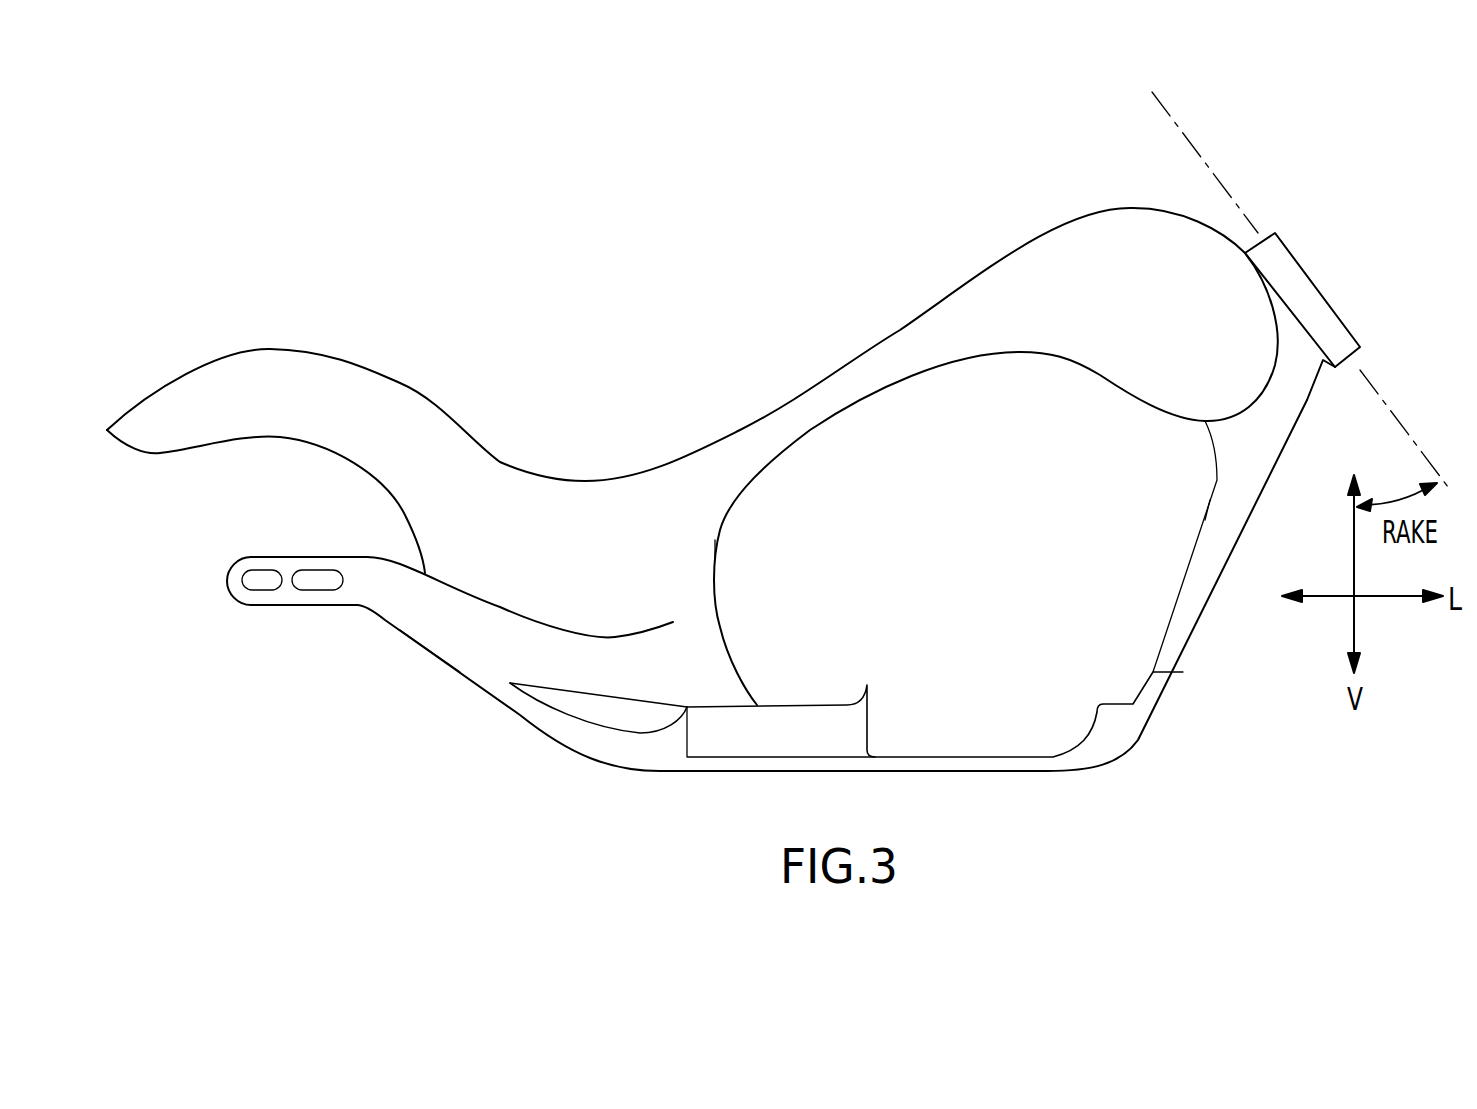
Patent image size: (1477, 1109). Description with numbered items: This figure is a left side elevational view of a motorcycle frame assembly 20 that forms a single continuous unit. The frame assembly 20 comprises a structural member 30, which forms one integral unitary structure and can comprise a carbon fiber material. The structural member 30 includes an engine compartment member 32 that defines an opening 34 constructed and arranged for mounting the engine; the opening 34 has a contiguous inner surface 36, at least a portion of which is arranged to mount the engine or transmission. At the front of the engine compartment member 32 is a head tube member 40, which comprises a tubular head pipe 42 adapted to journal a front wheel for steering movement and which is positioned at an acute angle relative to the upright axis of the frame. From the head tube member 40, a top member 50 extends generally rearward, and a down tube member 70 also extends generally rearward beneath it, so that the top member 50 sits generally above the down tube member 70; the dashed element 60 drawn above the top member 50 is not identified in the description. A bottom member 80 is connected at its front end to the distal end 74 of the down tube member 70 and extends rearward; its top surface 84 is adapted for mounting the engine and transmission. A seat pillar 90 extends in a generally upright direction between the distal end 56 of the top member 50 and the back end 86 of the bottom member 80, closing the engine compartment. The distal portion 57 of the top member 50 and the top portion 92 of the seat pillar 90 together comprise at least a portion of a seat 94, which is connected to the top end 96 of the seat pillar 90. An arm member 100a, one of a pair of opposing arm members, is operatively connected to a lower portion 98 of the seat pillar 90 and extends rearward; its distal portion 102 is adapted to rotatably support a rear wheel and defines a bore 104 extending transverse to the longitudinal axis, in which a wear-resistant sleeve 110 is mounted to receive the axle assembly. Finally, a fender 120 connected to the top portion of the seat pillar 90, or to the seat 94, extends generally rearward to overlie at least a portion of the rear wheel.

The frame assembly 20 is at (721, 452).
The structural member 30 is at (837, 372).
The engine compartment member 32 is at (1010, 353).
The opening 34 is at (1015, 558).
The contiguous inner surface 36 is at (895, 755).
The head tube member 40 is at (1300, 289).
The tubular head pipe 42 is at (1263, 235).
The top member 50 is at (882, 390).
The distal end of the top member 56 is at (683, 523).
The distal portion of the top member 57 is at (755, 552).
The fuel tank 60 is at (1113, 267).
The down tube member 70 is at (1213, 498).
The distal end of the down tube member 74 is at (1183, 672).
The bottom member 80 is at (987, 772).
The top surface 84 is at (993, 755).
The back end of the bottom member 86 is at (730, 743).
The seat pillar 90 is at (697, 632).
The top portion of the seat pillar 92 is at (573, 533).
The seat 94 is at (582, 480).
The top end of the seat pillar 96 is at (625, 533).
The lower portion of the seat pillar 98 is at (708, 690).
The arm member 100a is at (433, 643).
The distal portion of the arm member 102 is at (305, 607).
The bore 104 is at (412, 583).
The sleeve 110 is at (247, 577).
The fender 120 is at (275, 348).